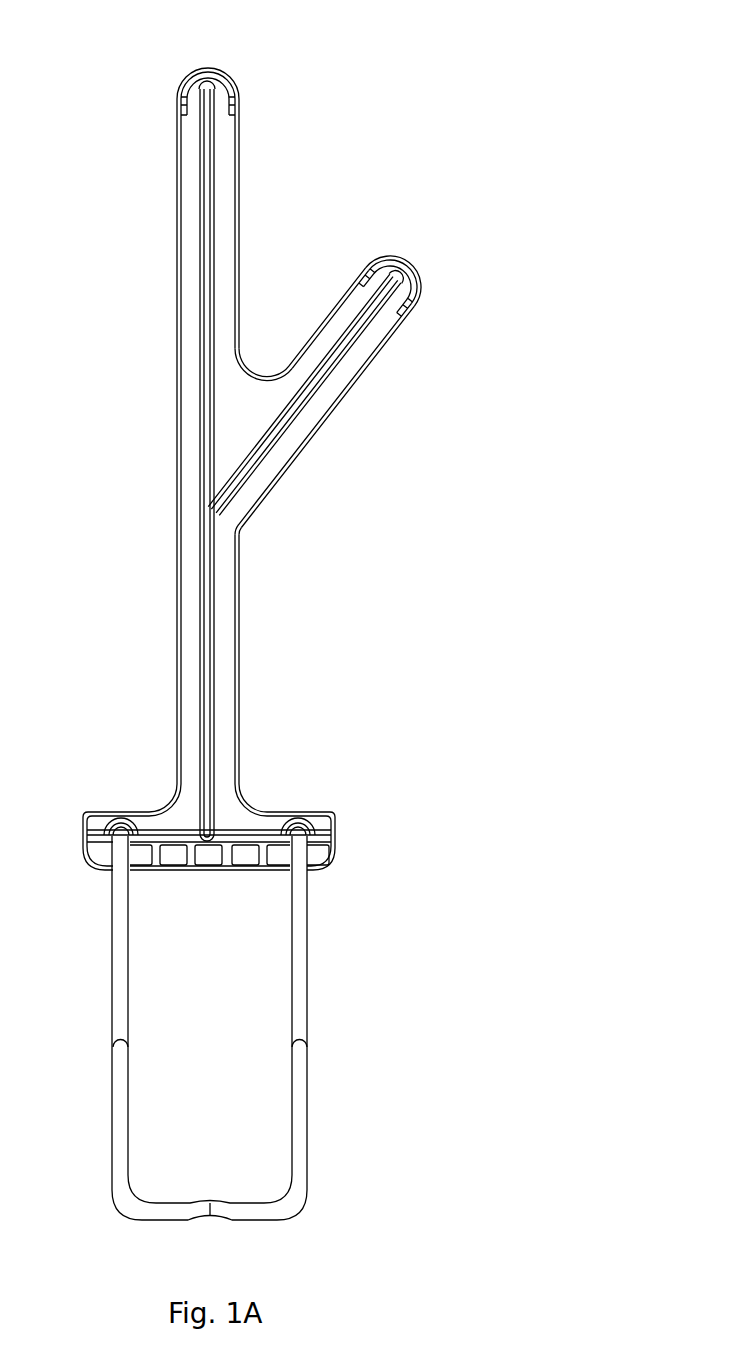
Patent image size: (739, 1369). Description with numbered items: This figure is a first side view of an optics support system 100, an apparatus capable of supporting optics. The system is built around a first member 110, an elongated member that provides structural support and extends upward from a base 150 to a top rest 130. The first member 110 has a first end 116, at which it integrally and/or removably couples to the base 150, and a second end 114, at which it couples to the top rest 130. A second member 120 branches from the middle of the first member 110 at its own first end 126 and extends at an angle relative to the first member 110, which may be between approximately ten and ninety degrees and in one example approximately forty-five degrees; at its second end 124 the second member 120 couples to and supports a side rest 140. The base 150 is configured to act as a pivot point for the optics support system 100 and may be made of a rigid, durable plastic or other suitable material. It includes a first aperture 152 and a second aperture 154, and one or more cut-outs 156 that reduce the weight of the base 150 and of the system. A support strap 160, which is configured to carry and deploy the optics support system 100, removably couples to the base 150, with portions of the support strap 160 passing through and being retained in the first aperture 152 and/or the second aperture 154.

The optics support system 100 is at (97, 43).
The first member 110 is at (186, 457).
The second end 114 is at (170, 125).
The first end 116 is at (158, 779).
The second member 120 is at (307, 392).
The second end 124 is at (433, 312).
The first end 126 is at (272, 549).
The top rest 130 is at (231, 62).
The side rest 140 is at (422, 270).
The base 150 is at (209, 810).
The first aperture 152 is at (342, 806).
The second aperture 154 is at (85, 800).
The cut-outs 156 is at (255, 941).
The support strap 160 is at (248, 1133).